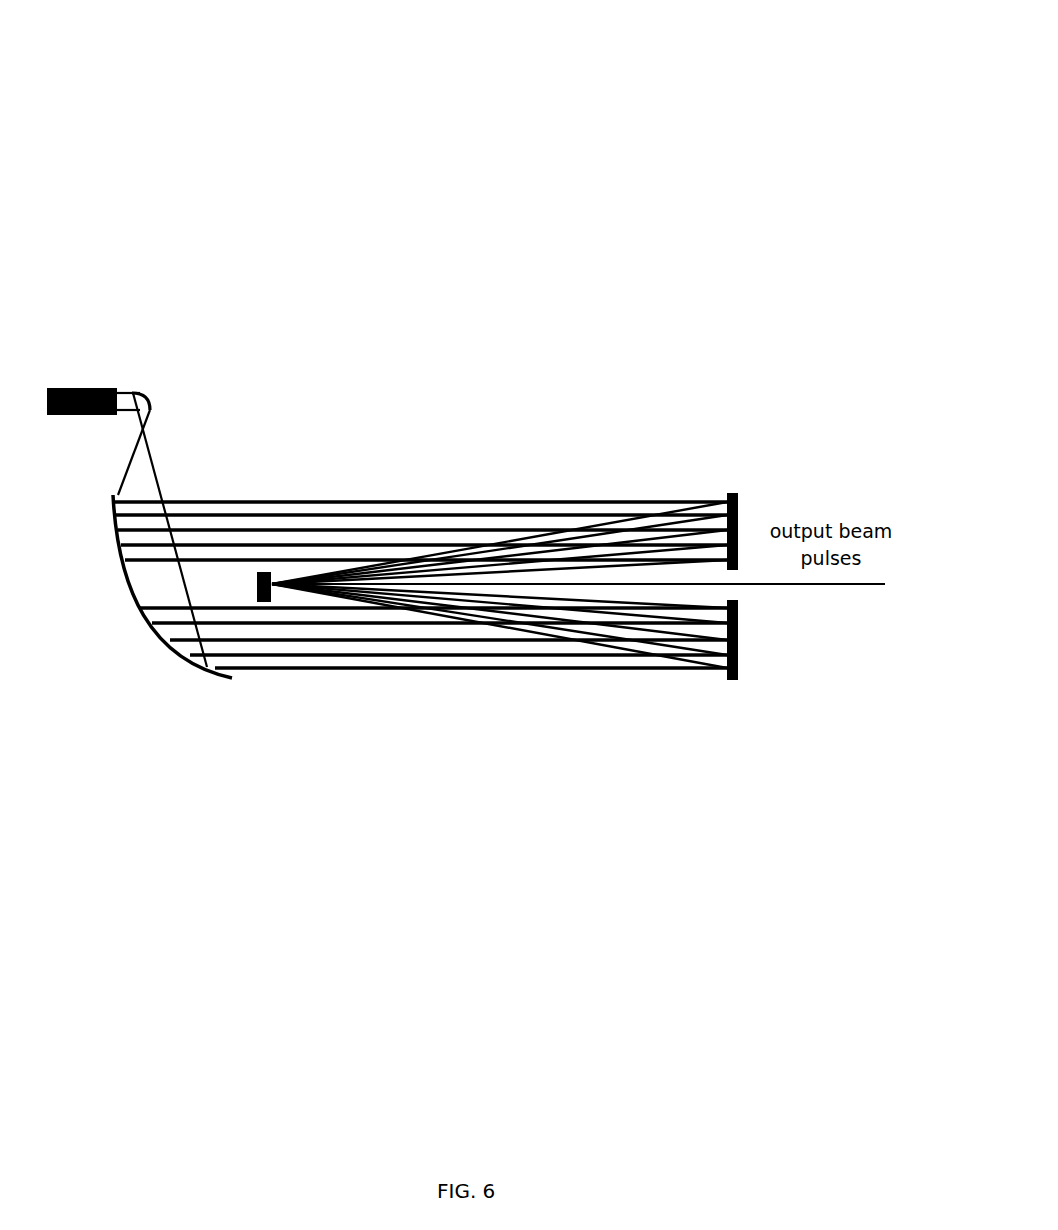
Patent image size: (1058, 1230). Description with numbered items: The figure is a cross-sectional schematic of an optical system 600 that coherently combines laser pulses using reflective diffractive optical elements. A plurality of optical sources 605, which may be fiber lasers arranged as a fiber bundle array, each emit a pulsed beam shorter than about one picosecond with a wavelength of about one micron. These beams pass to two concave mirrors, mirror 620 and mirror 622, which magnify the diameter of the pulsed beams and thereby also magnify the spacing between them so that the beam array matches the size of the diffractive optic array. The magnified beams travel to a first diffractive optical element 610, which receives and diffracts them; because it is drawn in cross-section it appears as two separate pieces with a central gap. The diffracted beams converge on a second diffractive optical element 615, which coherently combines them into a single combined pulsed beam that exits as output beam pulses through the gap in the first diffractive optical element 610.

The optical system 600 is at (742, 60).
The plurality of optical sources 605 is at (75, 392).
The first diffractive optical element 610 is at (728, 494).
The second diffractive optical element 615 is at (263, 572).
The mirror 620 is at (143, 392).
The mirror 622 is at (133, 592).